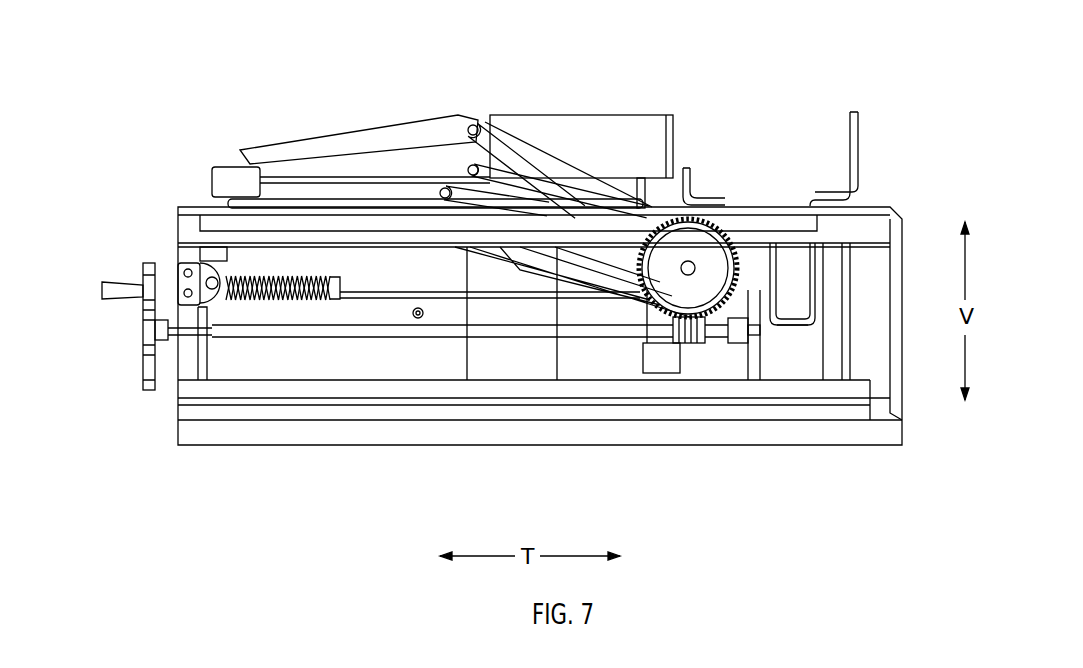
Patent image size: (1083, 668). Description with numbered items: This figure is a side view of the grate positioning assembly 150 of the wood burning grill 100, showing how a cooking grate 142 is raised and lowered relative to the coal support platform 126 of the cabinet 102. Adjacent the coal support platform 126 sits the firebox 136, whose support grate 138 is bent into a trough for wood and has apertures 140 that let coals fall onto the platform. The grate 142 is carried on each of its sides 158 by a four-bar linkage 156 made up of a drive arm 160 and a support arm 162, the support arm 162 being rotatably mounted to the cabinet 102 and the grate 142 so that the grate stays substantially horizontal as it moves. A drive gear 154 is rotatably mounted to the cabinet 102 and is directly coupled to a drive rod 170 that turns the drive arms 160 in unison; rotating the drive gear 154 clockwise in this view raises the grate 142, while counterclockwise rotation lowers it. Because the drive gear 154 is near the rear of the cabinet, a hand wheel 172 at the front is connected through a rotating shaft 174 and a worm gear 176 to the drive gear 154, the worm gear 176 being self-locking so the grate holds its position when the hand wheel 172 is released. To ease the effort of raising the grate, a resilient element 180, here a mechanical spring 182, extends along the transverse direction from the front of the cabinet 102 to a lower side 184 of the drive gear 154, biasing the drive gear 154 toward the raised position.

The wood burning grill 100 is at (112, 105).
The cabinet 102 is at (840, 440).
The coal support platform 126 is at (352, 366).
The firebox 136 is at (874, 152).
The support grate 138 is at (812, 272).
The apertures 140 is at (802, 326).
The cooking grate 142 is at (595, 120).
The grate positioning assembly 150 is at (498, 368).
The drive gear 154 is at (700, 238).
The four-bar linkage 156 is at (534, 126).
The sides 158 is at (340, 147).
The drive arm 160 is at (540, 172).
The support arm 162 is at (488, 145).
The drive rod 170 is at (690, 261).
The hand wheel 172 is at (150, 268).
The rotating shaft 174 is at (246, 330).
The worm gear 176 is at (682, 318).
The resilient element 180 is at (307, 260).
The mechanical spring 182 is at (272, 283).
The lower side 184 is at (684, 292).